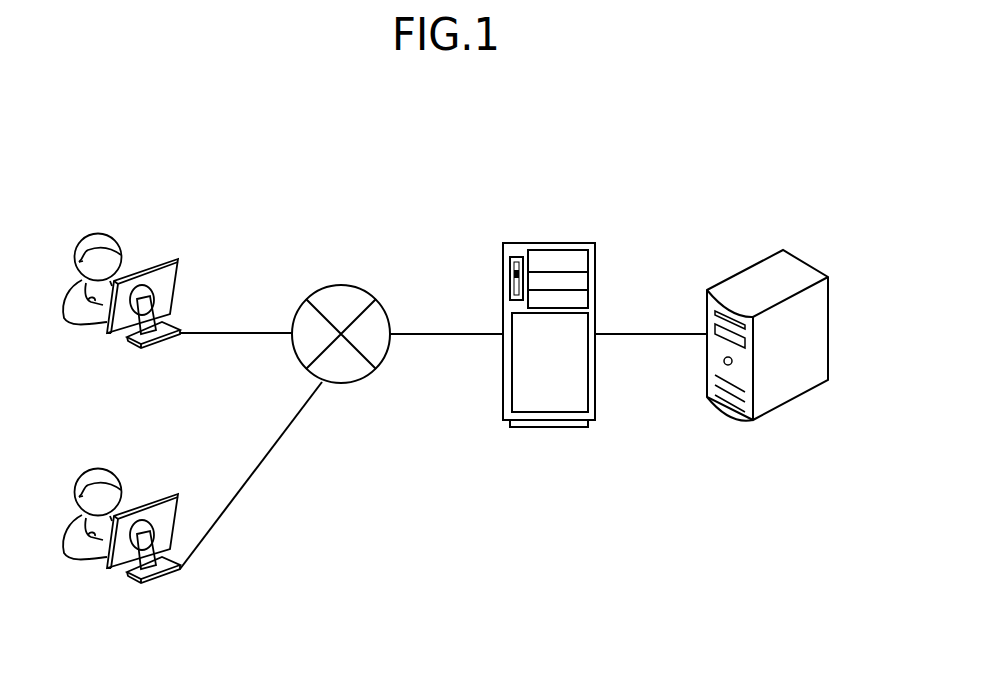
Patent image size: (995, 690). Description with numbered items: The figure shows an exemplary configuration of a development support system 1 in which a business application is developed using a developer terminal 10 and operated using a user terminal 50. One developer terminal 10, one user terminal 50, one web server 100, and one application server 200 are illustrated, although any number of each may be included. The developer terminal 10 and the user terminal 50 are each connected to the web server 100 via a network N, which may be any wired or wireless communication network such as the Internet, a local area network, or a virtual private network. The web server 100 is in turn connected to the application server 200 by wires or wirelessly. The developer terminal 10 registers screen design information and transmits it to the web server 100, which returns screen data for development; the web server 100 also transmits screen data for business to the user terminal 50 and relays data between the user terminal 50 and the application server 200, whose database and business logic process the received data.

The development support system 1 is at (330, 183).
The developer terminal 10 is at (176, 262).
The user terminal 50 is at (176, 497).
The network N is at (344, 286).
The web server 100 is at (548, 243).
The application server 200 is at (755, 262).